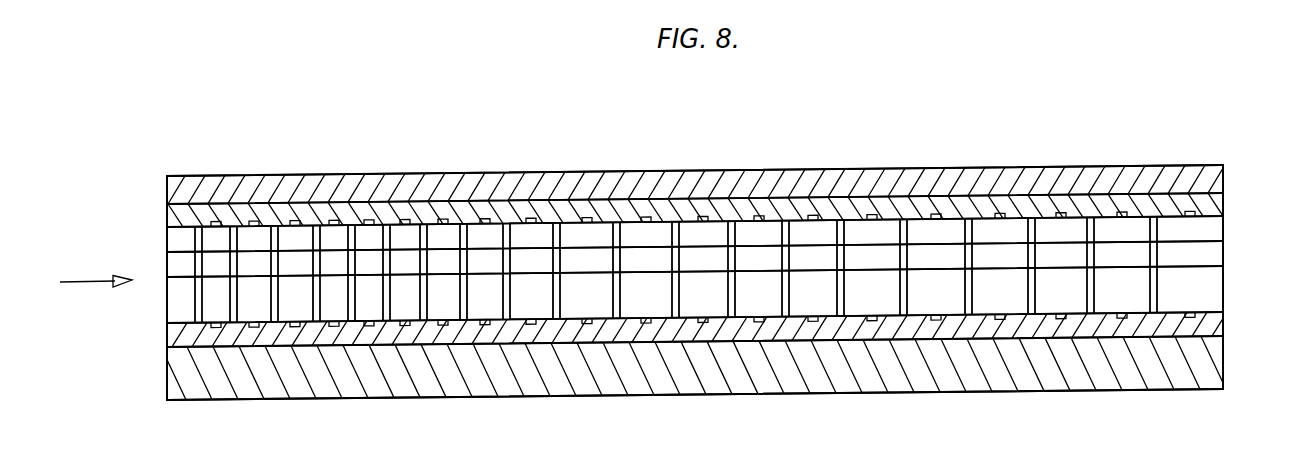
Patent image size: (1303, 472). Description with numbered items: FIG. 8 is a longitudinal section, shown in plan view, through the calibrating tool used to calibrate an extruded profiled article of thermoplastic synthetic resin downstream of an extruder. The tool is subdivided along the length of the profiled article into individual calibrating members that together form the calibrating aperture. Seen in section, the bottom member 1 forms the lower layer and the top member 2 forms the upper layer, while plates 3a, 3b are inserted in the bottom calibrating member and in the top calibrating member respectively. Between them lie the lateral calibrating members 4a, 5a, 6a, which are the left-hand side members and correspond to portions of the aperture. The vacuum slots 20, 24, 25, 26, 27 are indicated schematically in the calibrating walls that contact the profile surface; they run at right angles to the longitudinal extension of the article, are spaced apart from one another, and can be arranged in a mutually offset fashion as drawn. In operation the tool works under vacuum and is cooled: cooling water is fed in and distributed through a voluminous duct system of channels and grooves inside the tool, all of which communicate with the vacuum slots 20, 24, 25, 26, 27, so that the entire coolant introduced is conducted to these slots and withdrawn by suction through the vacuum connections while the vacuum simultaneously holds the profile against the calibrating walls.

The bottom member 1 is at (1215, 383).
The top member 2 is at (1223, 188).
The plate 3a is at (1213, 338).
The plate 3b is at (1213, 213).
The lateral calibrating member 4a is at (1213, 306).
The lateral calibrating member 5a is at (1212, 268).
The lateral calibrating member 6a is at (1213, 242).
The vacuum slot 20 is at (483, 223).
The vacuum slot 24 is at (448, 328).
The vacuum slot 25 is at (620, 305).
The vacuum slot 26 is at (622, 268).
The vacuum slot 27 is at (618, 240).